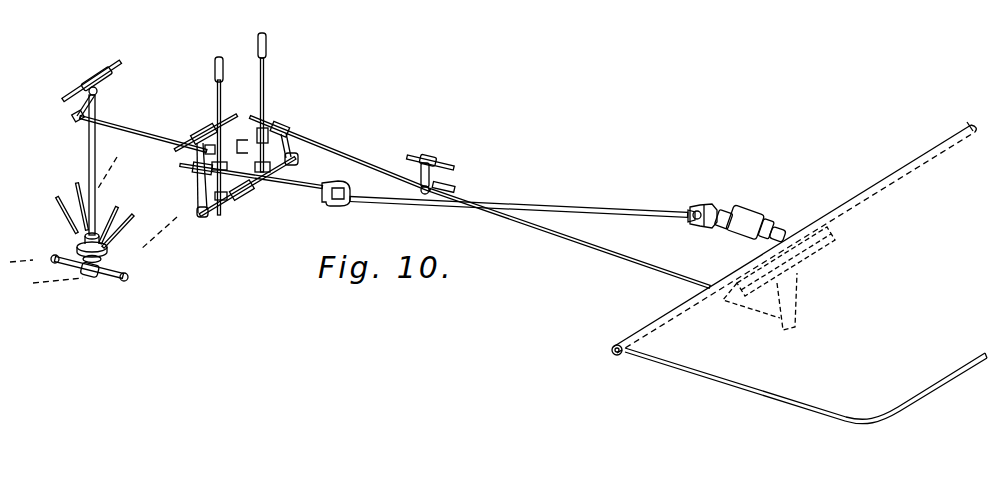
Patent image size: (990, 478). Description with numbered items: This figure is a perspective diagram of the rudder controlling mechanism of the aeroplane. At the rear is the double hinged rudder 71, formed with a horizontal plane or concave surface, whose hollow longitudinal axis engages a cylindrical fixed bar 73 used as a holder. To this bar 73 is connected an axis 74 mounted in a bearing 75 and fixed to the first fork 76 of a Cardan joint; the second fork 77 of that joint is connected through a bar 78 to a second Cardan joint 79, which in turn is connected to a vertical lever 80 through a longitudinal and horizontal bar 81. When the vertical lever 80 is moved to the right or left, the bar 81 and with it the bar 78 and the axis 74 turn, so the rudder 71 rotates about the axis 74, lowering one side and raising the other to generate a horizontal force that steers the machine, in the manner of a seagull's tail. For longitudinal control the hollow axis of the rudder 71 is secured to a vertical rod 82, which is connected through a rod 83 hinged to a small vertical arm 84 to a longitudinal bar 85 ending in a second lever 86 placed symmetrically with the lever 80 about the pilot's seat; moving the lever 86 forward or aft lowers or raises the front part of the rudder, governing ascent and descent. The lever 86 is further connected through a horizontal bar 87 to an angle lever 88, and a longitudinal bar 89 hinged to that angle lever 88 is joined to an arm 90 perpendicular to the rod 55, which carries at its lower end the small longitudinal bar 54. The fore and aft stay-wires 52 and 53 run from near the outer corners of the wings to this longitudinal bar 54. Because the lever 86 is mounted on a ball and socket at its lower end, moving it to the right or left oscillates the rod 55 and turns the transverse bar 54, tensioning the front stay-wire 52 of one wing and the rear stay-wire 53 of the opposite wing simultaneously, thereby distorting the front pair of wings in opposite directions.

The front stay-wire 52 is at (43, 258).
The rear stay-wire 53 is at (110, 281).
The longitudinal bar 54 is at (120, 260).
The rod 55 is at (89, 151).
The double hinged rudder 71 is at (806, 364).
The cylindrical fixed bar 73 is at (908, 168).
The axis 74 is at (782, 233).
The bearing 75 is at (749, 223).
The first fork 76 is at (703, 208).
The second fork 77 is at (692, 223).
The bar 78 is at (598, 212).
The second Cardan joint 79 is at (333, 204).
The vertical lever 80 is at (217, 112).
The longitudinal and horizontal bar 81 is at (302, 186).
The vertical rod 82 is at (788, 297).
The rod 83 is at (543, 228).
The small vertical arm 84 is at (445, 182).
The longitudinal bar 85 is at (355, 160).
The lever 86 is at (264, 84).
The horizontal bar 87 is at (255, 142).
The angle lever 88 is at (237, 147).
The longitudinal bar 89 is at (160, 140).
The arm 90 is at (97, 108).